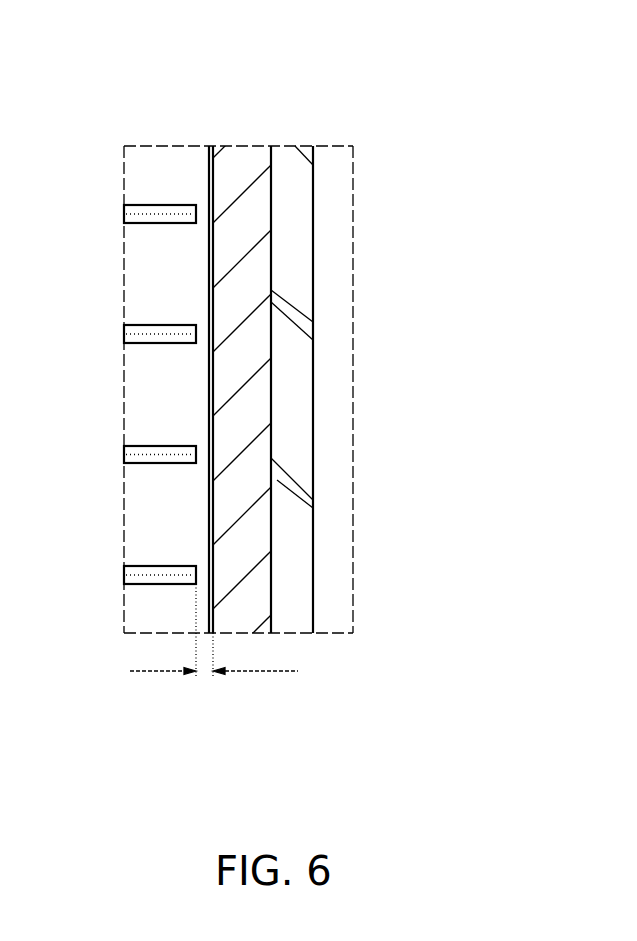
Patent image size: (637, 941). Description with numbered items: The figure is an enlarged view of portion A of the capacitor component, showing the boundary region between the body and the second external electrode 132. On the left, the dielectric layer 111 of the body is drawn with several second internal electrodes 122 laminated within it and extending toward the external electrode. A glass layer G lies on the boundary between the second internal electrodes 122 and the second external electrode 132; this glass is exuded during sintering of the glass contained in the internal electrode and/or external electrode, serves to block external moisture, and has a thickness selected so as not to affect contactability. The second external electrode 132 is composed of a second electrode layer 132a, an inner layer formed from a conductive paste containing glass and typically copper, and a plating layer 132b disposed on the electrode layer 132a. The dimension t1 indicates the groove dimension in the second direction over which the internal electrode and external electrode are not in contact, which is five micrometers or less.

The dielectric layer 111 is at (148, 272).
The second internal electrode 122 is at (161, 213).
The glass layer G is at (211, 146).
The second external electrode 132 is at (357, 386).
The second electrode layer 132a is at (248, 408).
The plating layer 132b is at (280, 478).
The dimension of groove t1 is at (214, 630).
The portion A is at (245, 44).